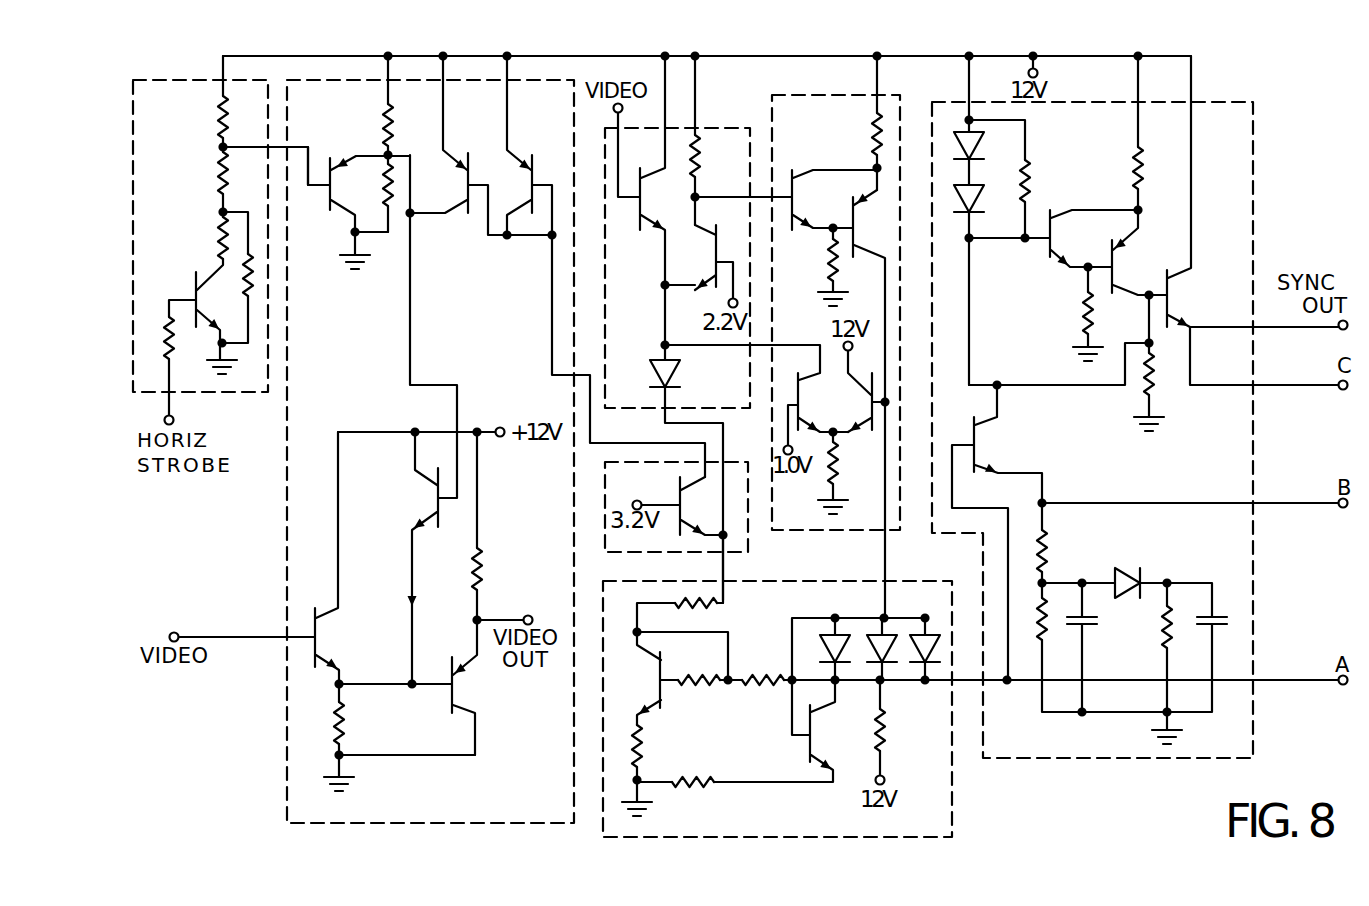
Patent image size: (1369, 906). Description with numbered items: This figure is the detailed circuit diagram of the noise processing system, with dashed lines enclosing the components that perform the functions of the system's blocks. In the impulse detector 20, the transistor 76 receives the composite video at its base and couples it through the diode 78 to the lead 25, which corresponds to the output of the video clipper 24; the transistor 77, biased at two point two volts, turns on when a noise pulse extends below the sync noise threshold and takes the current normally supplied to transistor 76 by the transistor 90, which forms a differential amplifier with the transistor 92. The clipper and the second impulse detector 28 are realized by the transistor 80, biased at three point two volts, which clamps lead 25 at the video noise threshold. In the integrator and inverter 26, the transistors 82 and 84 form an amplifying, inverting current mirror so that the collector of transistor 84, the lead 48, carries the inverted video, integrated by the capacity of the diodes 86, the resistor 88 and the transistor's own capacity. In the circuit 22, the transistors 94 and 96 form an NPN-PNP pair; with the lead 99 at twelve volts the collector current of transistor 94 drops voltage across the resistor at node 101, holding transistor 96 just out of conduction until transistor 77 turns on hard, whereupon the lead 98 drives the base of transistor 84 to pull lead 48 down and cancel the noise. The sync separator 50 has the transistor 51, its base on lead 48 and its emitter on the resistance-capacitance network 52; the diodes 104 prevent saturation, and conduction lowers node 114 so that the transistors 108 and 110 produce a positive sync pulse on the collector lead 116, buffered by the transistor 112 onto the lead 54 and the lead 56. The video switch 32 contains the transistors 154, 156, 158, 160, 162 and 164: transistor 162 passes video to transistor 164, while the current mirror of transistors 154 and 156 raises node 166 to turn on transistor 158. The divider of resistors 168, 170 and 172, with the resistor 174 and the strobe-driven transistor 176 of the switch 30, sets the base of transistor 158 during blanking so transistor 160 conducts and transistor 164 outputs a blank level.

The impulse detector 20 is at (714, 128).
The noise processing circuit 22 is at (824, 95).
The video clipper 24 is at (644, 554).
The lead 25 is at (723, 590).
The integrator and inverter 26 is at (800, 581).
The impulse detector 28 is at (700, 552).
The video switch 30 is at (186, 80).
The video switch 32 is at (287, 546).
The lead 48 is at (940, 684).
The sync separator 50 is at (1255, 578).
The transistor 51 is at (990, 444).
The resistance-capacitance network 52 is at (1152, 575).
The lead 54 is at (1316, 331).
The lead 56 is at (1192, 358).
The transistor 76 is at (648, 195).
The transistor 77 is at (711, 259).
The diode 78 is at (681, 373).
The transistor 80 is at (676, 492).
The transistor 82 is at (654, 678).
The transistor 84 is at (817, 733).
The diodes 86 is at (928, 615).
The resistor 88 is at (778, 674).
The transistor 90 is at (804, 402).
The transistor 92 is at (872, 420).
The transistor 94 is at (793, 170).
The transistor 96 is at (852, 206).
The lead 98 is at (885, 298).
The lead 99 is at (734, 195).
The node 101 is at (877, 168).
The diodes 104 is at (984, 160).
The transistor 108 is at (1052, 238).
The transistor 110 is at (1125, 253).
The transistor 112 is at (1184, 294).
The node 114 is at (1025, 246).
The collector lead 116 is at (1147, 342).
The transistor 154 is at (556, 137).
The transistor 156 is at (468, 187).
The transistor 158 is at (320, 158).
The transistor 160 is at (438, 498).
The transistor 162 is at (332, 639).
The transistor 164 is at (467, 686).
The node 166 is at (388, 153).
The resistor 168 is at (214, 121).
The resistor 170 is at (214, 184).
The resistor 172 is at (248, 280).
The resistor 174 is at (222, 238).
The transistor 176 is at (194, 275).